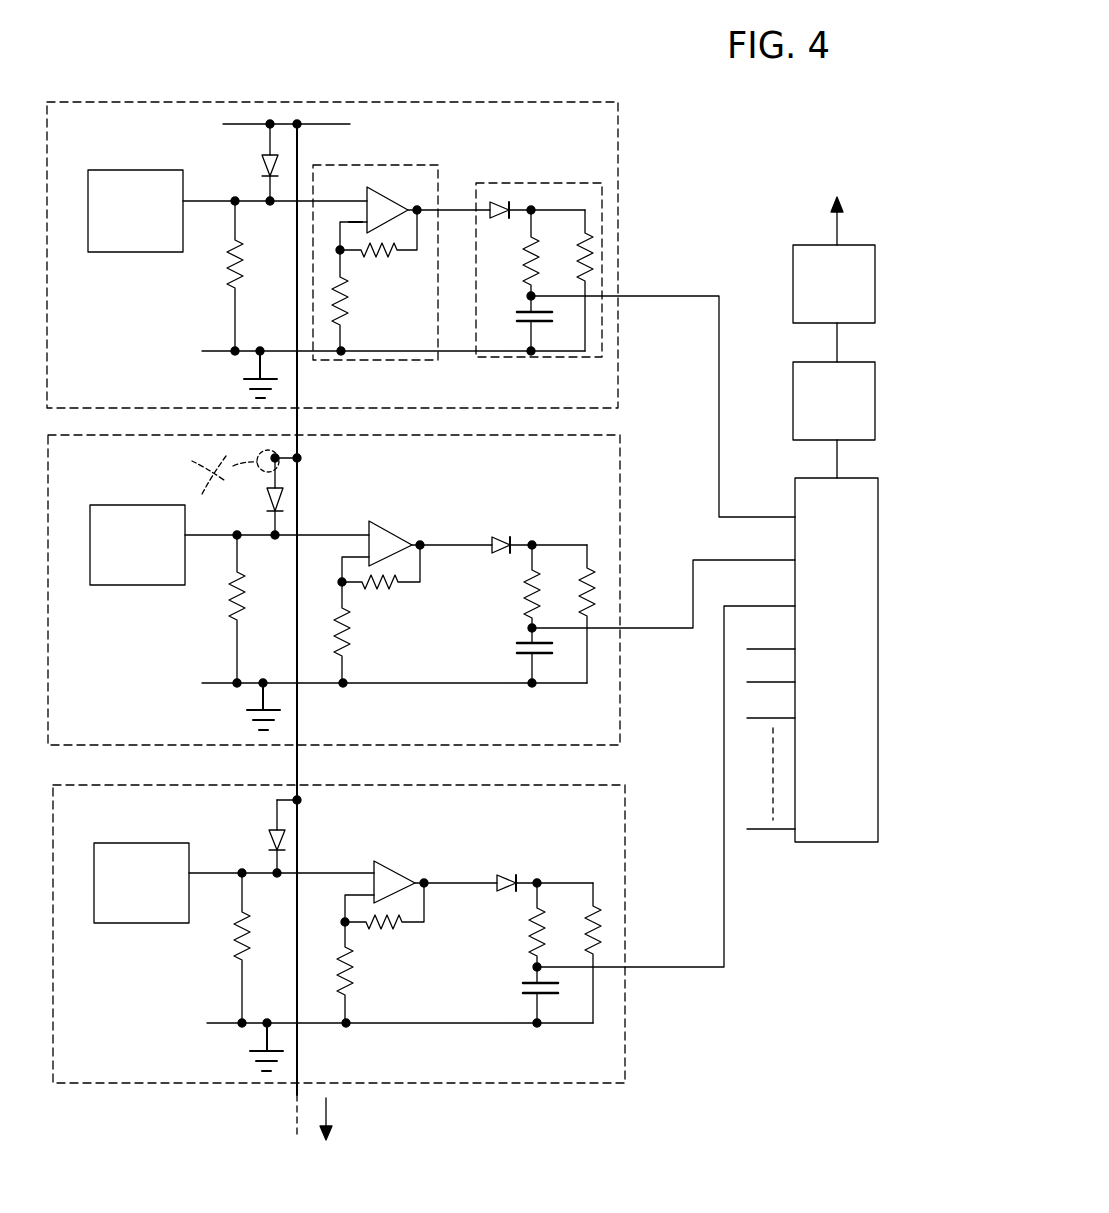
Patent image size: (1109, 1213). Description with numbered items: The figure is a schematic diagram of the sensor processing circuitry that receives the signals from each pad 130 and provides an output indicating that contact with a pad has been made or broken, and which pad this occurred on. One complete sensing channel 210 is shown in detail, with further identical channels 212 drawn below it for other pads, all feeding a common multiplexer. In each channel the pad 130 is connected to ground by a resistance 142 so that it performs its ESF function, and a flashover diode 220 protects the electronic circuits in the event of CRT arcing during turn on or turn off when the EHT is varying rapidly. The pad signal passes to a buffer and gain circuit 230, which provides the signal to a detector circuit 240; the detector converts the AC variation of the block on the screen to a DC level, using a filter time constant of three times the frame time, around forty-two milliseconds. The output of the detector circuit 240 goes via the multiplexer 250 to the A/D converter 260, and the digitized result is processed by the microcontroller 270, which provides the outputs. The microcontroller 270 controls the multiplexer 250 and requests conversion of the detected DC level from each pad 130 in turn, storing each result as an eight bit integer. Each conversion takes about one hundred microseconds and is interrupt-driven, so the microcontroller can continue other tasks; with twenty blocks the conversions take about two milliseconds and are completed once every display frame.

The pad 130 is at (112, 219).
The resistance 142 is at (220, 264).
The sensor channel circuit 210 is at (623, 175).
The additional sensor channel circuit 212 is at (620, 490).
The flashover diode 220 is at (263, 162).
The buffer and gain circuit 230 is at (412, 162).
The detector circuit 240 is at (530, 180).
The multiplexer 250 is at (877, 485).
The Analog to Digital (A/D) converter 260 is at (877, 373).
The microcontroller 270 is at (877, 257).